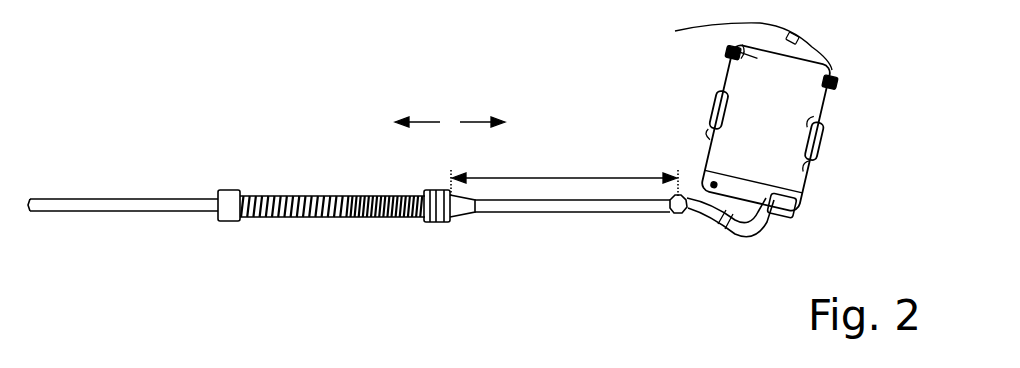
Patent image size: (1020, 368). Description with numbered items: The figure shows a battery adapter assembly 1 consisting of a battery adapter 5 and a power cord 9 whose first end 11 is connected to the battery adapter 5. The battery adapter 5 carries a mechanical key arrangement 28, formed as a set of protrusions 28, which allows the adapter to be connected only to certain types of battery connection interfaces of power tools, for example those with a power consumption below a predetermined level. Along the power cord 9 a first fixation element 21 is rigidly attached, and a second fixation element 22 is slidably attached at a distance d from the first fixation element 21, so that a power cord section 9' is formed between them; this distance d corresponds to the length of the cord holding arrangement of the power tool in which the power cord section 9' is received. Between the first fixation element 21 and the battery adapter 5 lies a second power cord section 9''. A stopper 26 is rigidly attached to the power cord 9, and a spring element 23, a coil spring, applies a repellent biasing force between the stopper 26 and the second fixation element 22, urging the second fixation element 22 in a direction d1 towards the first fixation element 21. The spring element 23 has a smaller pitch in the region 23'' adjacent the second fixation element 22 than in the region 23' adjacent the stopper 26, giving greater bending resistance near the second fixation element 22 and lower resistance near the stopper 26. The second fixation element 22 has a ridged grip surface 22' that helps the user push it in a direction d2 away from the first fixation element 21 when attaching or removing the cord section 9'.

The battery adapter assembly 1 is at (241, 57).
The power cord 9 is at (123, 173).
The power cord section 9' is at (572, 236).
The second power cord section 9'' is at (751, 232).
The stopper 26 is at (228, 205).
The spring element 23 is at (332, 209).
The region of the stopper 23' is at (292, 239).
The region of the second fixation element 23'' is at (385, 239).
The second fixation element 22 is at (473, 236).
The grip surface 22' is at (446, 236).
The first fixation element 21 is at (675, 216).
The battery adapter 5 is at (748, 101).
The first end 11 is at (803, 200).
The mechanical key arrangement 28 is at (730, 48).
The distance d is at (564, 163).
The direction d1 is at (478, 120).
The direction d2 is at (431, 120).